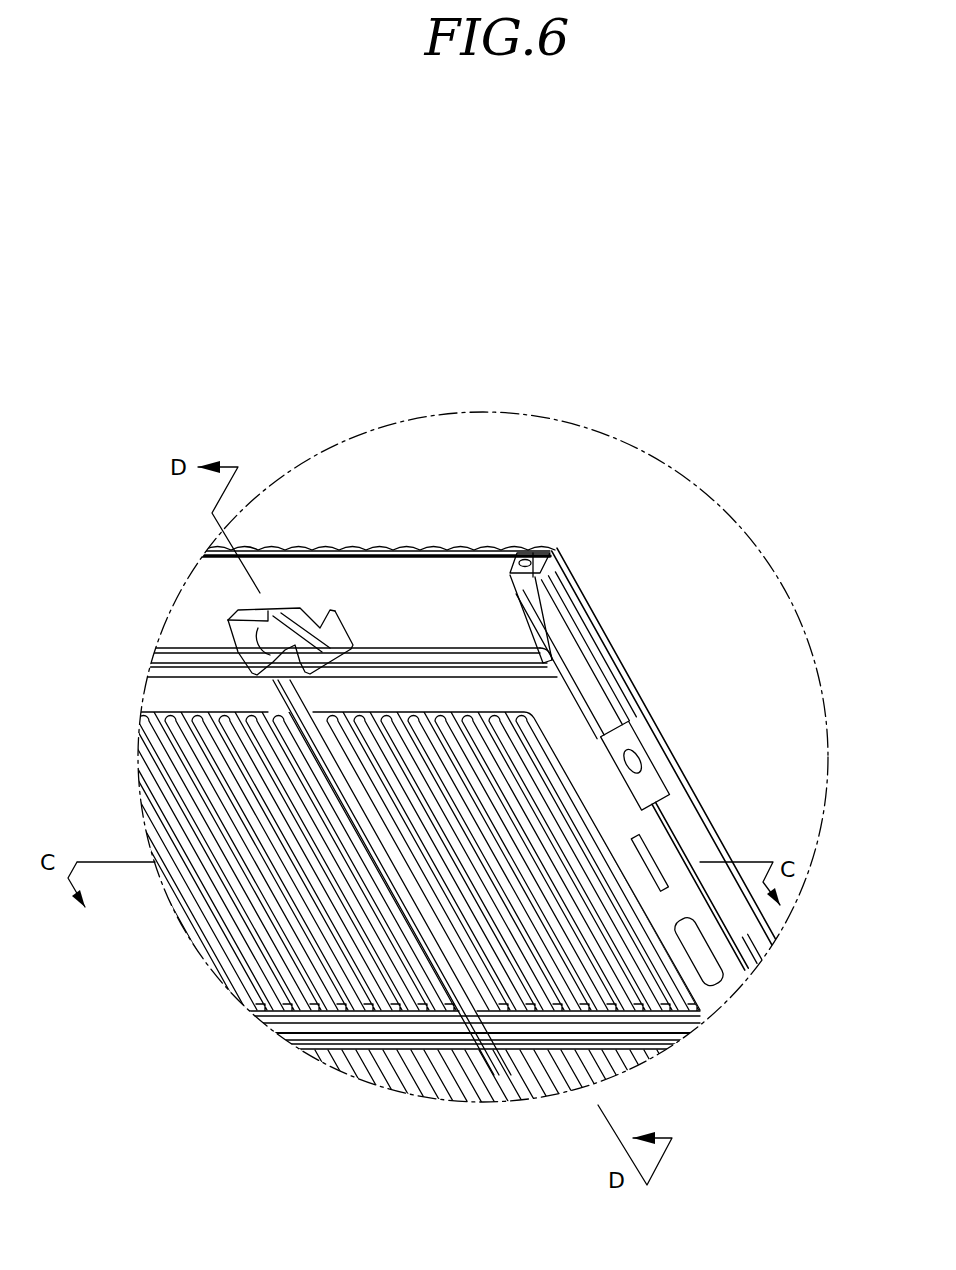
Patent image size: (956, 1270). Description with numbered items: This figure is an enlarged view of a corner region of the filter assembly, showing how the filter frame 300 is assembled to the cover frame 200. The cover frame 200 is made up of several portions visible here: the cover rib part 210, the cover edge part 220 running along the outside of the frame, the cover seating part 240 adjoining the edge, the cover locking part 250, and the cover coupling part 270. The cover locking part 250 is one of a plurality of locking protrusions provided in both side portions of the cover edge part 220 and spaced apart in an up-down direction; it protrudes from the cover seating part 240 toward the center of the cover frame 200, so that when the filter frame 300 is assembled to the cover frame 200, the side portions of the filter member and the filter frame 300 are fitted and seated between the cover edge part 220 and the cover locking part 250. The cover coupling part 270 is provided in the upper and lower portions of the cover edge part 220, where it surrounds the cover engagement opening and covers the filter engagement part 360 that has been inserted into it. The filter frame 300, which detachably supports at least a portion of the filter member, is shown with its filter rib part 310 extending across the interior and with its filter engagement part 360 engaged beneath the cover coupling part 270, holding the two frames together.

The cover frame 200 is at (592, 378).
The cover rib part 210 is at (550, 548).
The cover edge part 220 is at (423, 568).
The cover seating part 240 is at (483, 678).
The cover locking part 250 is at (713, 975).
The cover coupling part 270 is at (338, 623).
The filter frame 300 is at (409, 895).
The filter rib part 310 is at (670, 1028).
The filter engagement part 360 is at (237, 617).